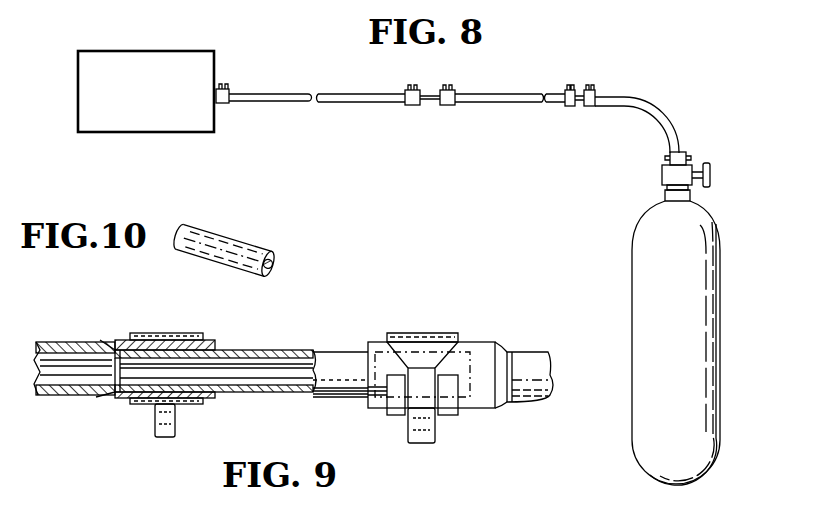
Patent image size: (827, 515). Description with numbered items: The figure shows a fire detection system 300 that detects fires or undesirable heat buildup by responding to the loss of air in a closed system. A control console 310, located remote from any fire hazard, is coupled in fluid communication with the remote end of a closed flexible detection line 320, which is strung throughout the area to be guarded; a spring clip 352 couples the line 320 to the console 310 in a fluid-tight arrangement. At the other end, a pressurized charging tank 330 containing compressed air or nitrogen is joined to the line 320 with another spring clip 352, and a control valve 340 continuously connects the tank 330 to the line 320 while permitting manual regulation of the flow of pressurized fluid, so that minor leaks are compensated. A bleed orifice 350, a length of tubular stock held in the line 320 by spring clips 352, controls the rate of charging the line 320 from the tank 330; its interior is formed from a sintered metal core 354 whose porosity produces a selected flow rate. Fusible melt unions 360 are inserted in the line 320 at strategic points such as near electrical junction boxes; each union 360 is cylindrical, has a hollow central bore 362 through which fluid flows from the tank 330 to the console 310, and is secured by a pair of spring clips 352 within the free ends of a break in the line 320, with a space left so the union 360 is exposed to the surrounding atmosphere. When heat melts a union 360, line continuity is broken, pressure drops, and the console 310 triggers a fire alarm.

In FIG. 8, the fire detection system 300 is at (349, 64).
In FIG. 8, the control console 310 is at (124, 51).
In FIG. 8, the flexible detection line 320 is at (293, 103).
In FIG. 9, the flexible detection line 320 is at (44, 342).
In FIG. 8, the pressurized charging tank 330 is at (712, 305).
In FIG. 8, the control valve 340 is at (709, 168).
In FIG. 8, the bleed orifice 350 is at (578, 91).
In FIG. 10, the bleed orifice 350 is at (231, 234).
In FIG. 8, the spring clip 352 is at (225, 105).
In FIG. 9, the spring clip 352 is at (185, 333).
In FIG. 10, the sintered metal core 354 is at (274, 272).
In FIG. 8, the fusible melt union 360 is at (430, 105).
In FIG. 9, the fusible melt union 360 is at (343, 396).
In FIG. 9, the hollow central bore 362 is at (277, 393).